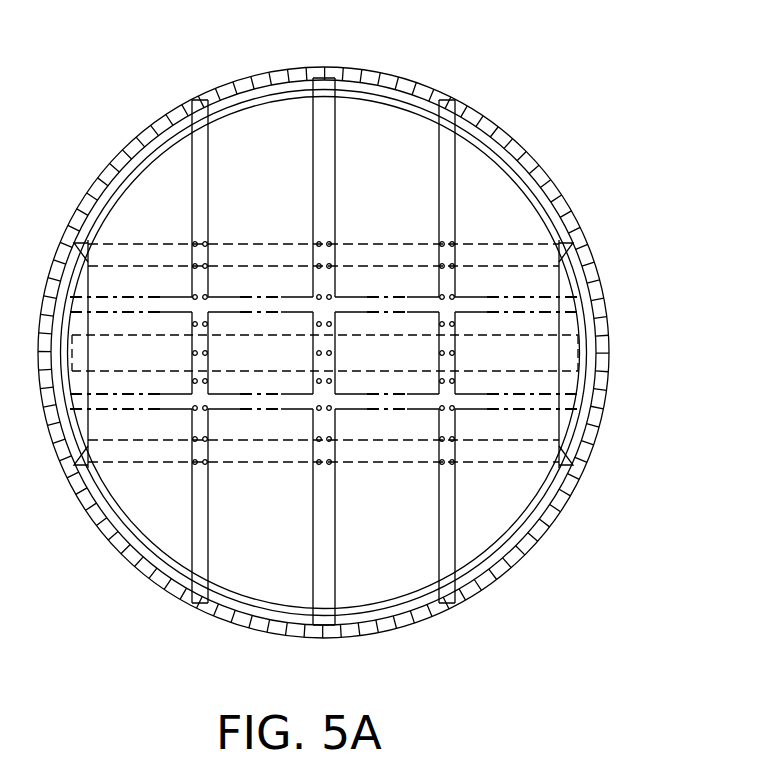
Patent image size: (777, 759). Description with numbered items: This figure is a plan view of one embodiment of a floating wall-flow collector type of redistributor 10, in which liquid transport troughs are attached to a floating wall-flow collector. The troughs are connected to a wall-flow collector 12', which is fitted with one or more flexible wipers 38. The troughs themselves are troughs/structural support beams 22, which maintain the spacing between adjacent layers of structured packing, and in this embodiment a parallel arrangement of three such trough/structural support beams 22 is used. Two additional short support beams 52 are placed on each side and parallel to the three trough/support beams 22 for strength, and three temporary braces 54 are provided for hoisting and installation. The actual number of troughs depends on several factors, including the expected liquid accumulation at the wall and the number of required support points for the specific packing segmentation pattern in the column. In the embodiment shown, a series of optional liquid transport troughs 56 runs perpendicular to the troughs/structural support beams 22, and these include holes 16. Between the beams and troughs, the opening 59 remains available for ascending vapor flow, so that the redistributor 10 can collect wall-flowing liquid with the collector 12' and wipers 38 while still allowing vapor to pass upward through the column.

The redistributor 10 is at (545, 75).
The wall-flow collector 12' is at (332, 353).
The holes 16 is at (193, 468).
The troughs/structural support beams 22 is at (197, 183).
The flexible wipers 38 is at (603, 345).
The short support beams 52 is at (582, 263).
The temporary braces 54 is at (133, 258).
The liquid transport troughs 56 is at (507, 400).
The opening 59 is at (373, 150).